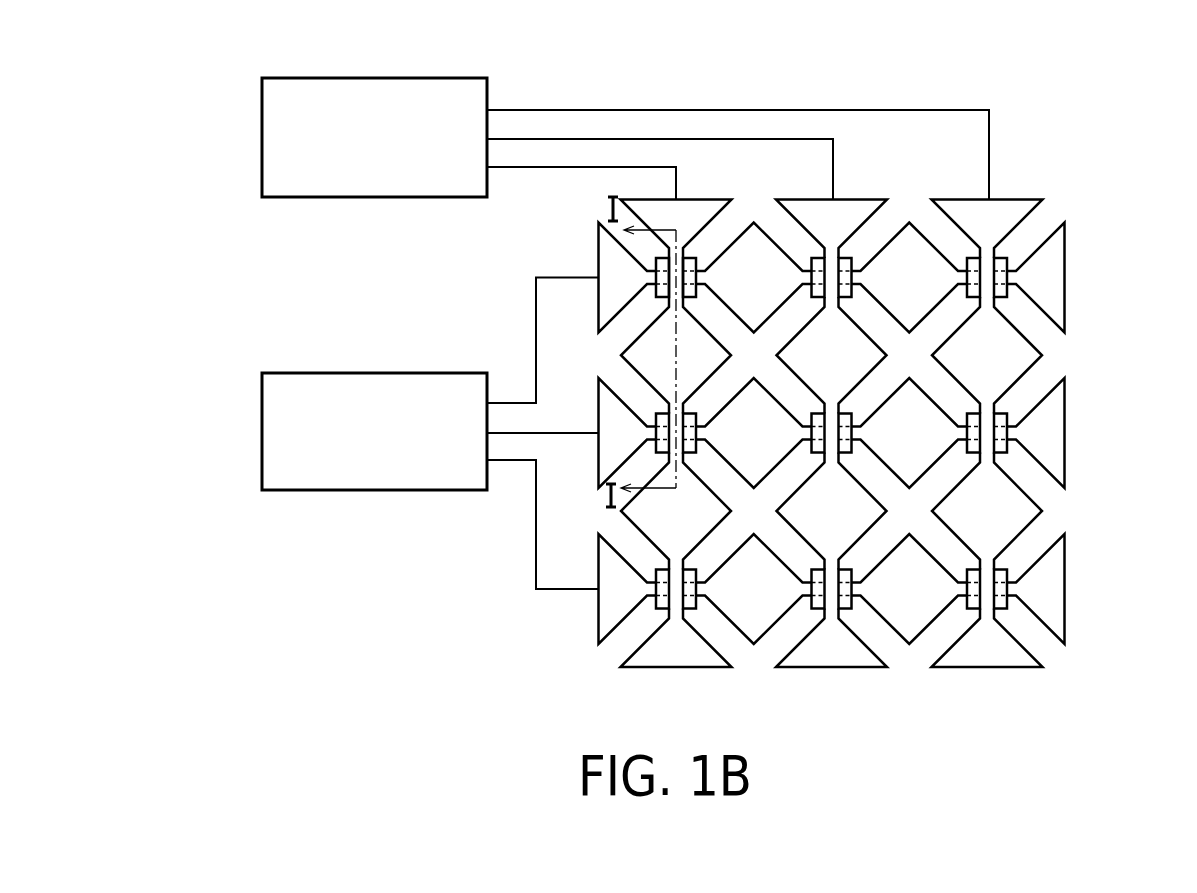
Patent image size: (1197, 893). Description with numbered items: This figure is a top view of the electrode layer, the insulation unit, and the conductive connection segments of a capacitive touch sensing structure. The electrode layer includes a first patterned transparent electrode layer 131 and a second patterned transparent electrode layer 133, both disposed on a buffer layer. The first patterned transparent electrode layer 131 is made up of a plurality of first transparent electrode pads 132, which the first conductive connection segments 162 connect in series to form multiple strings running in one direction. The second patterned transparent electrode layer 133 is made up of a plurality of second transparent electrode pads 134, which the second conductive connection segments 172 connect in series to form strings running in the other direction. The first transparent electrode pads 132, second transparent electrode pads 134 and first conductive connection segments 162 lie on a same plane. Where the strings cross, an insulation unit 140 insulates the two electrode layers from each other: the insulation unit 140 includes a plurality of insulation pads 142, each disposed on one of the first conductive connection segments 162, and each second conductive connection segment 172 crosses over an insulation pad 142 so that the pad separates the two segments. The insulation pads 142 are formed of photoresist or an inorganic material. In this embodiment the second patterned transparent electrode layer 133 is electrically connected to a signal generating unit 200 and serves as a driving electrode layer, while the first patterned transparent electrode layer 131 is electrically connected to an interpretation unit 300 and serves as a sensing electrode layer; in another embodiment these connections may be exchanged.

The signal generating unit 200 is at (262, 141).
The interpretation unit 300 is at (262, 437).
The first patterned transparent electrode layer 131 is at (612, 288).
The first transparent electrode pads 132 is at (607, 249).
The second patterned transparent electrode layer 133 is at (848, 217).
The second transparent electrode pads 134 is at (1004, 218).
The insulation unit 140 is at (658, 260).
The insulation pads 142 is at (657, 300).
The first conductive connection segments 162 is at (700, 272).
The second conductive connection segments 172 is at (679, 262).